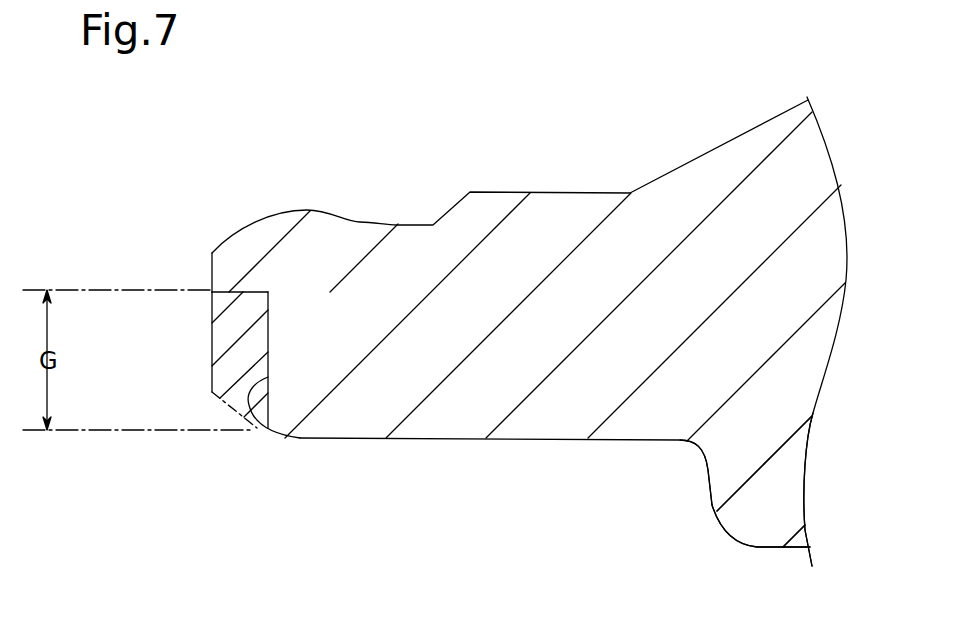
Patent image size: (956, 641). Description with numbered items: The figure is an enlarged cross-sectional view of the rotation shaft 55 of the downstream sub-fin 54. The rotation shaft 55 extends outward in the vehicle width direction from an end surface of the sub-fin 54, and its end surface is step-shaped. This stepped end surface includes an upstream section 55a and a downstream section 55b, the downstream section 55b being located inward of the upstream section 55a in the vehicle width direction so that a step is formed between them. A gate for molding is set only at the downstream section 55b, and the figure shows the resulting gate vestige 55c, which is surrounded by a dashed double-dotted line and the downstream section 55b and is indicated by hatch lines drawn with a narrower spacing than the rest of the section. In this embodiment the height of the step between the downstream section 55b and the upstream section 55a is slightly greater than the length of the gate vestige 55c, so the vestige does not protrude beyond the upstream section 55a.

The rotation shaft 55 is at (268, 218).
The upstream section 55a is at (212, 274).
The downstream section 55b is at (257, 430).
The gate vestige 55c is at (212, 350).
The sub-fin 54 is at (763, 549).